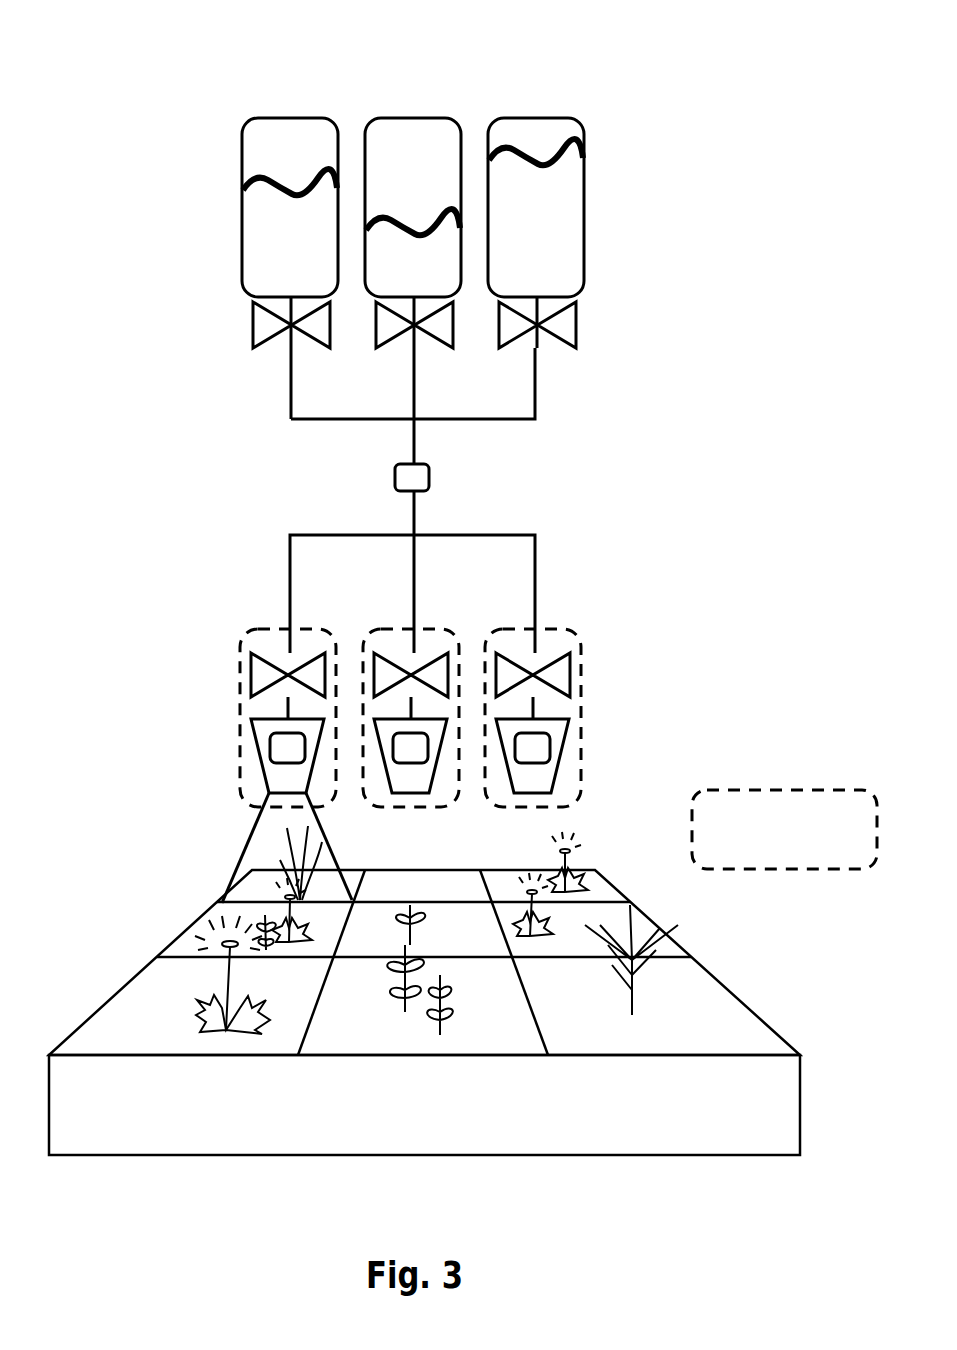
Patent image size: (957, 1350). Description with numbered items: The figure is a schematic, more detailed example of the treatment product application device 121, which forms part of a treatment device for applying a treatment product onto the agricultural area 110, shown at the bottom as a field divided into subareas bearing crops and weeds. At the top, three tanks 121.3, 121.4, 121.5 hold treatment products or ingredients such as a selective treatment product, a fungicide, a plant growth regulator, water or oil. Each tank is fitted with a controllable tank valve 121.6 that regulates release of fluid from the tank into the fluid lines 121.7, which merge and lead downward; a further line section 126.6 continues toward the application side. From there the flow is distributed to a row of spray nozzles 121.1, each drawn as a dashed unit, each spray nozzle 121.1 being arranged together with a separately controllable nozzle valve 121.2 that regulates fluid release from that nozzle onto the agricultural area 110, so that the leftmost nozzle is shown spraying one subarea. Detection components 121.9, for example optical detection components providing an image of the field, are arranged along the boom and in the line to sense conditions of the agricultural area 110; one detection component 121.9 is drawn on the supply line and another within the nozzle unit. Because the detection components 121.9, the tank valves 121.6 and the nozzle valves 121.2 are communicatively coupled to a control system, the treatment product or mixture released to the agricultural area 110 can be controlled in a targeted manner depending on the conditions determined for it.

The treatment product application device 121 is at (221, 78).
The tank 121.3 is at (327, 159).
The tank 121.4 is at (450, 181).
The tank 121.5 is at (573, 236).
The tank valve 121.6 is at (265, 338).
The fluid line 121.7 is at (535, 389).
The detection component 121.9 is at (395, 478).
The distribution line 126.6 is at (417, 515).
The spray nozzle 121.1 is at (568, 612).
The nozzle valve 121.2 is at (253, 662).
The agricultural area 110 is at (758, 1120).